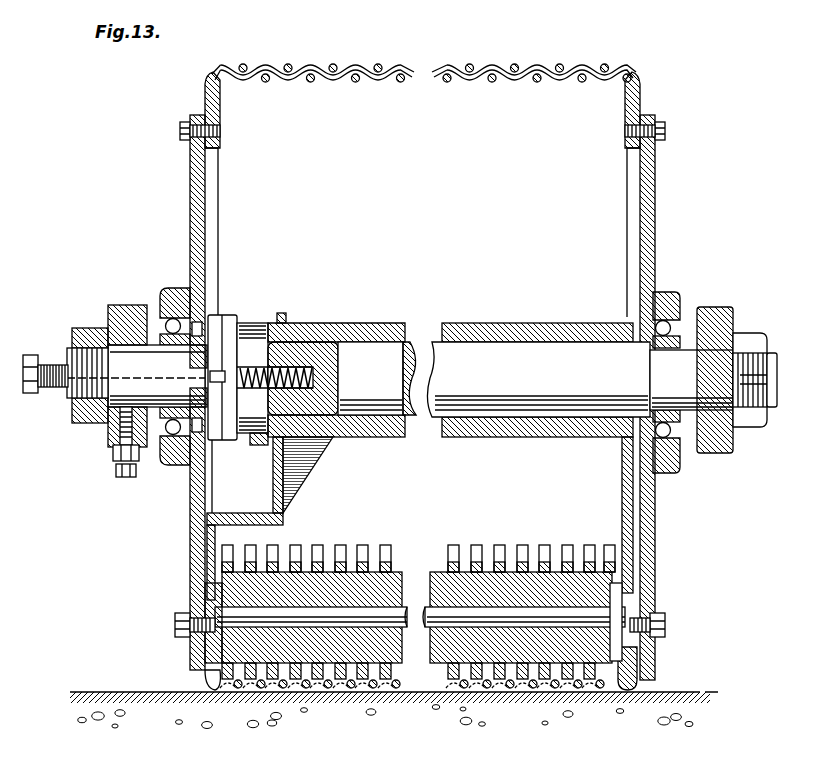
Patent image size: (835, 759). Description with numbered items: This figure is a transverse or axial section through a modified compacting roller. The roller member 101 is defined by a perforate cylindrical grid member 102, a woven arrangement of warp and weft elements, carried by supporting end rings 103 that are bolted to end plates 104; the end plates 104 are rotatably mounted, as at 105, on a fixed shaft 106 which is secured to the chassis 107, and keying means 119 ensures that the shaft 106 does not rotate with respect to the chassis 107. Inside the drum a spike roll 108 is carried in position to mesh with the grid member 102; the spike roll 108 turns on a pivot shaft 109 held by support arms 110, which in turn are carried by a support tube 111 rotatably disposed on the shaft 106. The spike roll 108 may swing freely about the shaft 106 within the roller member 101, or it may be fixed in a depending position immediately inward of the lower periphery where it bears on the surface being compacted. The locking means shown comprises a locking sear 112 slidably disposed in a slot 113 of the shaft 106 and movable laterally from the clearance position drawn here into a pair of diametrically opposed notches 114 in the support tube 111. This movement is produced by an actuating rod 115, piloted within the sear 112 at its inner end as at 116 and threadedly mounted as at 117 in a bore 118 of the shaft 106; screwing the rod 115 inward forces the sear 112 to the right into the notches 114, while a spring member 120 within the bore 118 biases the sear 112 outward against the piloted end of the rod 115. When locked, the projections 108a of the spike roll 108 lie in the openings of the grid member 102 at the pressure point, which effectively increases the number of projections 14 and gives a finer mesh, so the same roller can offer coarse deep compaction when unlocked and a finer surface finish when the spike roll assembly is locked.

The projections 14 is at (208, 248).
The roller member 101 is at (184, 517).
The perforate cylindrical grid member 102 is at (326, 80).
The end rings 103 is at (205, 96).
The end plates 104 is at (190, 185).
The rotatable mounting 105 is at (672, 320).
The fixed shaft 106 is at (416, 350).
The chassis 107 is at (118, 310).
The spike roll 108 is at (392, 580).
The projections 108a is at (500, 548).
The pivot shaft 109 is at (424, 608).
The support arms 110 is at (208, 582).
The support tube 111 is at (362, 325).
The locking sear 112 is at (222, 445).
The slot 113 is at (260, 335).
The notches 114 is at (268, 330).
The actuating rod 115 is at (52, 395).
The piloted inner end 116 is at (232, 358).
The threaded mounting 117 is at (82, 372).
The bore 118 is at (138, 372).
The keying means 119 is at (120, 438).
The spring member 120 is at (322, 378).